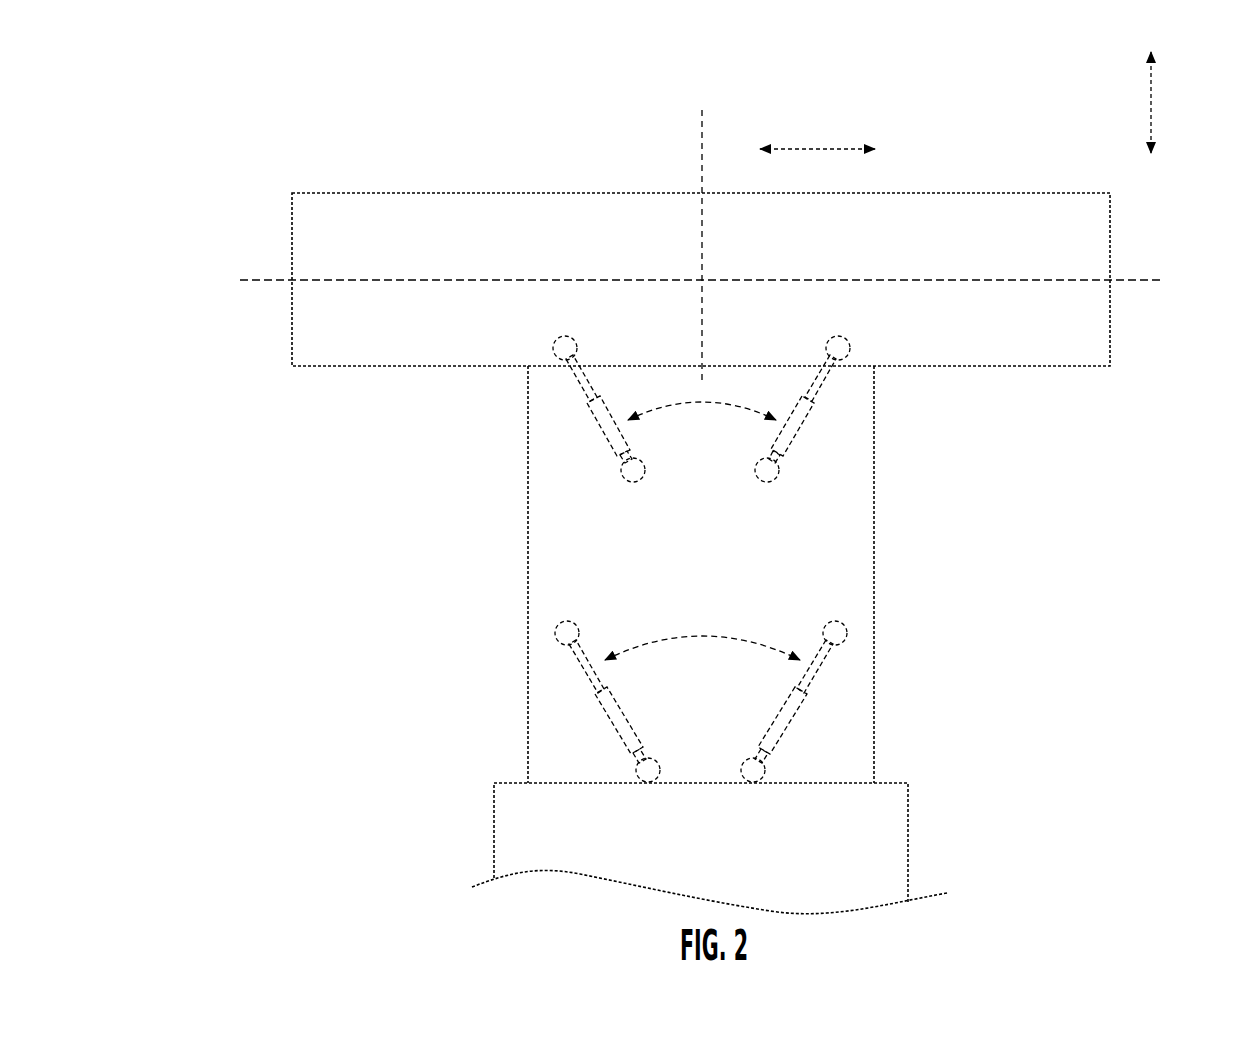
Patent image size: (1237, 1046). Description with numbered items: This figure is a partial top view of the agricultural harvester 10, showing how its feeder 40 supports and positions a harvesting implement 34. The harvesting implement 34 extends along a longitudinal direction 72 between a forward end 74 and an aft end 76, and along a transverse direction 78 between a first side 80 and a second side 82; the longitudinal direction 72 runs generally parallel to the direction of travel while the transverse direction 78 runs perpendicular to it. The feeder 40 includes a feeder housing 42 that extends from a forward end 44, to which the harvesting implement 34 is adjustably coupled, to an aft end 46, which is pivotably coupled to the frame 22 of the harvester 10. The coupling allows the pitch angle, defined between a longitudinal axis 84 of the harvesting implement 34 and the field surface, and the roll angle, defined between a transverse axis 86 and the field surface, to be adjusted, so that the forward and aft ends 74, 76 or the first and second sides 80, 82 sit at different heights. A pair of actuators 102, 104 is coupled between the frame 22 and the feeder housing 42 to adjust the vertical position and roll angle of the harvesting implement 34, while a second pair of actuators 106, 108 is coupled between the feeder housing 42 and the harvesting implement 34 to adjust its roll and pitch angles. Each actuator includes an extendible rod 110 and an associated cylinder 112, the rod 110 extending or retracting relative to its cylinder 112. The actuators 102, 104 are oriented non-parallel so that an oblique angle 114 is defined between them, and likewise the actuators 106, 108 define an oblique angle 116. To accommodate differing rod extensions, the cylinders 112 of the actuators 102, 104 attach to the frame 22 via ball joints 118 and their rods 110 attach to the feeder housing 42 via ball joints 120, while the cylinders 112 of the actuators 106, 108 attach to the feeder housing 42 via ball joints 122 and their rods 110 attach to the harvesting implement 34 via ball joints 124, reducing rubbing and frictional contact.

The agricultural harvester 10 is at (343, 110).
The frame 22 is at (494, 833).
The harvesting implement 34 is at (494, 192).
The feeder 40 is at (682, 574).
The feeder housing 42 is at (527, 560).
The forward end 44 is at (883, 376).
The aft end 46 is at (883, 775).
The longitudinal direction 72 is at (1150, 105).
The forward end 74 is at (975, 186).
The aft end 76 is at (1055, 389).
The transverse direction 78 is at (815, 148).
The first side 80 is at (263, 255).
The second side 82 is at (1131, 322).
The longitudinal axis 84 is at (700, 165).
The transverse axis 86 is at (416, 282).
The actuator 102 is at (596, 716).
The actuator 104 is at (809, 717).
The actuator 106 is at (571, 427).
The actuator 108 is at (833, 428).
The extendible rod 110 is at (585, 392).
The cylinder 112 is at (605, 446).
The oblique angle 114 is at (670, 635).
The oblique angle 116 is at (668, 402).
The ball joint 118 is at (648, 787).
The ball joint 120 is at (571, 616).
The ball joint 122 is at (631, 484).
The ball joint 124 is at (561, 332).